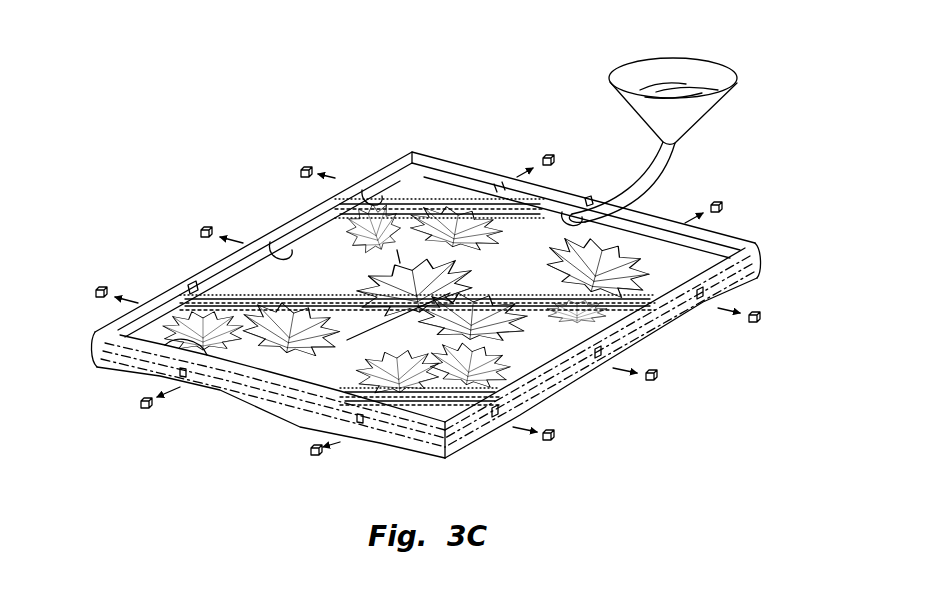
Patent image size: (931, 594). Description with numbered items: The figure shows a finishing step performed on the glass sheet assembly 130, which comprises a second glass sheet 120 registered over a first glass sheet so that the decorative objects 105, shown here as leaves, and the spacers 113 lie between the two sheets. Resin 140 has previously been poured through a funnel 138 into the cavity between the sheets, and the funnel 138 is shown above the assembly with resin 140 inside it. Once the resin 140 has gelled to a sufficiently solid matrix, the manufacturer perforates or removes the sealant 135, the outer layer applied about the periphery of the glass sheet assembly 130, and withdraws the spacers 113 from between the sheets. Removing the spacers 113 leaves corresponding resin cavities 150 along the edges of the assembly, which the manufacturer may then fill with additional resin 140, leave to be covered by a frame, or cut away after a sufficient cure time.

The decorative objects 105 is at (397, 217).
The spacers 113 is at (305, 172).
The second glass sheet 120 is at (220, 285).
The glass sheet assembly 130 is at (88, 328).
The sealant 135 is at (230, 380).
The funnel 138 is at (630, 63).
The resin 140 is at (693, 85).
The resin cavities 150 is at (292, 258).